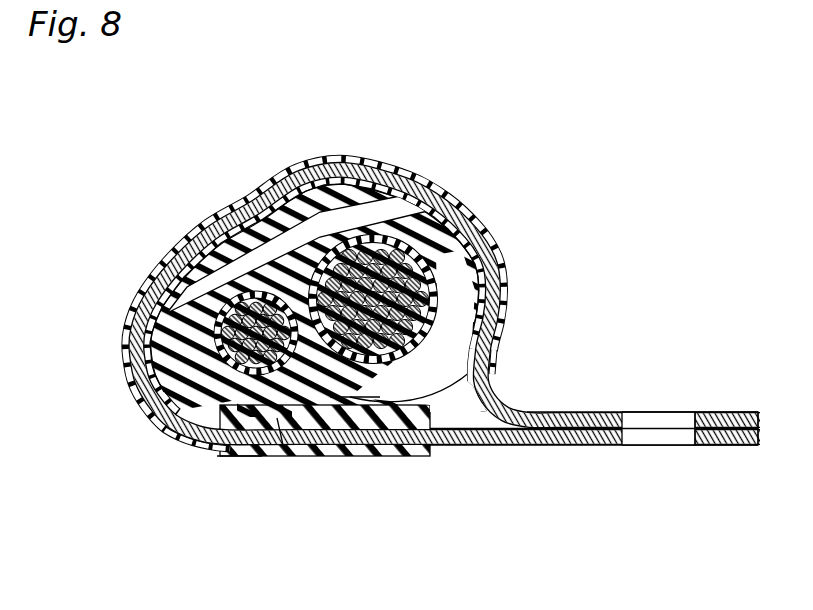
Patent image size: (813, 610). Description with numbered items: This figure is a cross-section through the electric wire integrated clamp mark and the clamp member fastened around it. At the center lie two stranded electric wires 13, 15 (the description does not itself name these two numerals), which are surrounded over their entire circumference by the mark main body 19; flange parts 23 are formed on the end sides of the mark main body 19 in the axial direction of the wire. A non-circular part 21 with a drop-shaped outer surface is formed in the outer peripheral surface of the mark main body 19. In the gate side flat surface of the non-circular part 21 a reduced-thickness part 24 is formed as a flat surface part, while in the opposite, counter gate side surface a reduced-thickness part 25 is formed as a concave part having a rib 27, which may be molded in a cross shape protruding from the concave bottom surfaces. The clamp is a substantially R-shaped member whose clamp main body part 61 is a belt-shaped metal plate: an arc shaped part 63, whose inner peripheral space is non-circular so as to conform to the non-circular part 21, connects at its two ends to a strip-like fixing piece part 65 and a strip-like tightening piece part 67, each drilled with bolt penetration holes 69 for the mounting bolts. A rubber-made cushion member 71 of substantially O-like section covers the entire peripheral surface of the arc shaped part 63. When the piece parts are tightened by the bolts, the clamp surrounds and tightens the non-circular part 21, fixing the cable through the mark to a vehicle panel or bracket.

The electric wire 13 is at (199, 325).
The electric wire 15 is at (396, 225).
The mark main body 19 is at (450, 382).
The non-circular part 21 is at (447, 242).
The flange parts 23 is at (445, 408).
The reduced-thickness part 24 is at (273, 237).
The reduced-thickness part 25 is at (217, 450).
The rib 27 is at (283, 445).
The clamp main body part 61 is at (590, 458).
The arc shaped part 63 is at (213, 225).
The fixing piece part 65 is at (722, 448).
The tightening piece part 67 is at (735, 412).
The bolt penetration holes 69 is at (637, 412).
The cushion member 71 is at (135, 400).